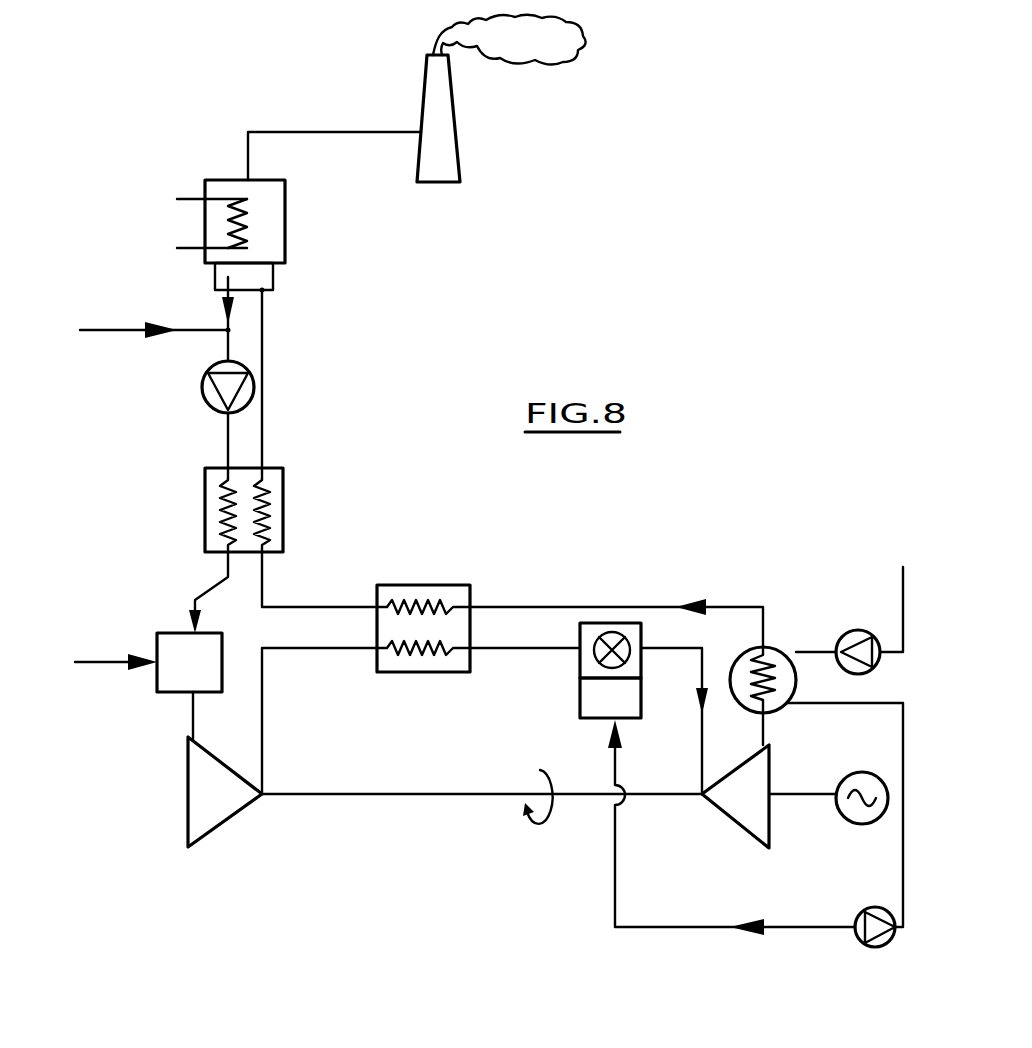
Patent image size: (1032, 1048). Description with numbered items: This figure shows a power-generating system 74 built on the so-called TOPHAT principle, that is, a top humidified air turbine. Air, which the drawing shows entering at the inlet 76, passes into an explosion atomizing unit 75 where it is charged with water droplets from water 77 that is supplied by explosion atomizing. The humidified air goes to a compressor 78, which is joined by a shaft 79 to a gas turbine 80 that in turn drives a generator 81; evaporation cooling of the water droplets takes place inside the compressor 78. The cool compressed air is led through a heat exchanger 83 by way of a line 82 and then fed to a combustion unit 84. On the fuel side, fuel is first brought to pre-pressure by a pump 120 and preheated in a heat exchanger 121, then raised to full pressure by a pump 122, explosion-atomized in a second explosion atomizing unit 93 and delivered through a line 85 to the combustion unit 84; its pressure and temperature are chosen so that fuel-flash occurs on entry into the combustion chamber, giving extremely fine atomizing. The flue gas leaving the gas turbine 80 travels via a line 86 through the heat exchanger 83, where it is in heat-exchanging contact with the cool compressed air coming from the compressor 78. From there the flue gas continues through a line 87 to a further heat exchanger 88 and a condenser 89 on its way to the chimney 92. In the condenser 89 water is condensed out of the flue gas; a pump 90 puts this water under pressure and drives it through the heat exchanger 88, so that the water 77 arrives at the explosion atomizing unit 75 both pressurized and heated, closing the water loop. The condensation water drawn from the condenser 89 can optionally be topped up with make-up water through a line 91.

The power-generating system 74 is at (635, 552).
The explosion atomizing unit 75 is at (172, 640).
The fuel inlet 76 is at (110, 658).
The water 77 is at (200, 595).
The compressor 78 is at (217, 817).
The shaft 79 is at (403, 795).
The gas turbine 80 is at (747, 812).
The generator 81 is at (870, 780).
The line 82 is at (262, 710).
The heat exchanger 83 is at (413, 667).
The combustion unit 84 is at (590, 630).
The line 85 is at (617, 882).
The line 86 is at (765, 632).
The line 87 is at (263, 583).
The heat exchanger 88 is at (275, 488).
The condenser 89 is at (286, 214).
The pump 90 is at (202, 393).
The line 91 is at (190, 328).
The chimney 92 is at (433, 98).
The explosion atomizing unit 93 is at (590, 697).
The pump 120 is at (853, 632).
The heat exchanger 121 is at (745, 695).
The pump 122 is at (878, 948).